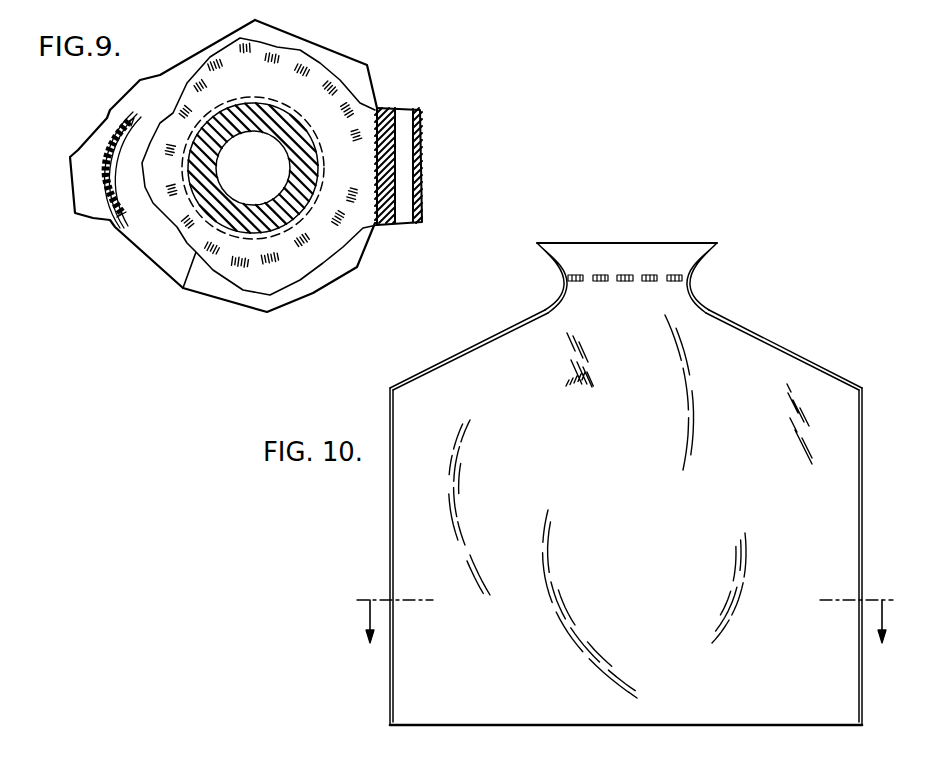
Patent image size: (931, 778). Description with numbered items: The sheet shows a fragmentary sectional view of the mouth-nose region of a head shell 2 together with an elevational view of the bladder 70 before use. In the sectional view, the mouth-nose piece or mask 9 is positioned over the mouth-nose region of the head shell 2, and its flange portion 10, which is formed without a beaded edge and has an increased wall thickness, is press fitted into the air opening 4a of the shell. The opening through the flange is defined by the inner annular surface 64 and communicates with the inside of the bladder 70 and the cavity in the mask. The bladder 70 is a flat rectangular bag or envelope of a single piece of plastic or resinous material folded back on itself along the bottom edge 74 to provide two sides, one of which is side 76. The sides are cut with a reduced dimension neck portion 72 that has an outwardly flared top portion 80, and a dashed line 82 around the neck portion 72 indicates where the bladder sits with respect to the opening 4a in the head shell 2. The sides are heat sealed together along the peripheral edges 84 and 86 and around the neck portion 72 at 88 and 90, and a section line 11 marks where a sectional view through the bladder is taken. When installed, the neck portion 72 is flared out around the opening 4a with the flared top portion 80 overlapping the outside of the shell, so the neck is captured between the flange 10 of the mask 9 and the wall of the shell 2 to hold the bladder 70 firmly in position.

In FIG. 9, the head shell 2 is at (123, 100).
In FIG. 9, the mouth-nose piece or mask 9 is at (80, 155).
In FIG. 9, the flange portion 10 is at (257, 114).
In FIG. 9, the air opening 4a is at (303, 143).
In FIG. 9, the inner annular surface 64 is at (213, 172).
In FIG. 9, the bladder 70 is at (182, 289).
In FIG. 10, the bladder 70 is at (408, 661).
In FIG. 9, the outwardly flared top portion 80 is at (243, 290).
In FIG. 10, the outwardly flared top portion 80 is at (650, 243).
In FIG. 10, the reduced dimension neck portion 72 is at (583, 293).
In FIG. 10, the bottom edge 74 is at (566, 726).
In FIG. 10, the side 76 is at (768, 365).
In FIG. 10, the dashed line 82 is at (623, 282).
In FIG. 10, the peripheral edge 84 is at (390, 492).
In FIG. 10, the peripheral edge 86 is at (863, 498).
In FIG. 10, the heat seal around neck portion 88 is at (484, 340).
In FIG. 10, the heat seal around neck portion 90 is at (730, 318).
In FIG. 10, the section line 11 is at (626, 608).